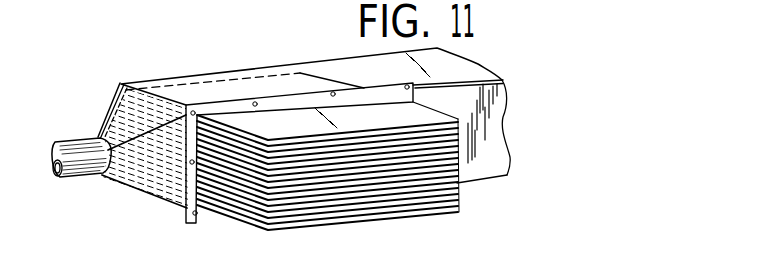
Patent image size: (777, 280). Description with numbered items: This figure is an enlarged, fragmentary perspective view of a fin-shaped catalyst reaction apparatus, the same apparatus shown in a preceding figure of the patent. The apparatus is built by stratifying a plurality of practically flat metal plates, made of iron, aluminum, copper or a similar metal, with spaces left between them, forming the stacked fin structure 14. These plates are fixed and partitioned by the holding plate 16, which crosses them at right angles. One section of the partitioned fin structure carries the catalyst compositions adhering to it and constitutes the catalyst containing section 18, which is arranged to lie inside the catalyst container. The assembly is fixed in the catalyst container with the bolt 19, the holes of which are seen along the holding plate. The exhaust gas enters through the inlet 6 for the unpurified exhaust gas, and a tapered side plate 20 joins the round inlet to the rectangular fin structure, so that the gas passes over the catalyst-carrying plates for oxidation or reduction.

The inlet for the unpurified exhaust gas 6 is at (78, 161).
The fin stack 14 is at (374, 226).
The holding plate 16 is at (188, 184).
The catalyst containing section 18 is at (229, 64).
The bolt 19 is at (198, 216).
The side plate 20 is at (110, 128).